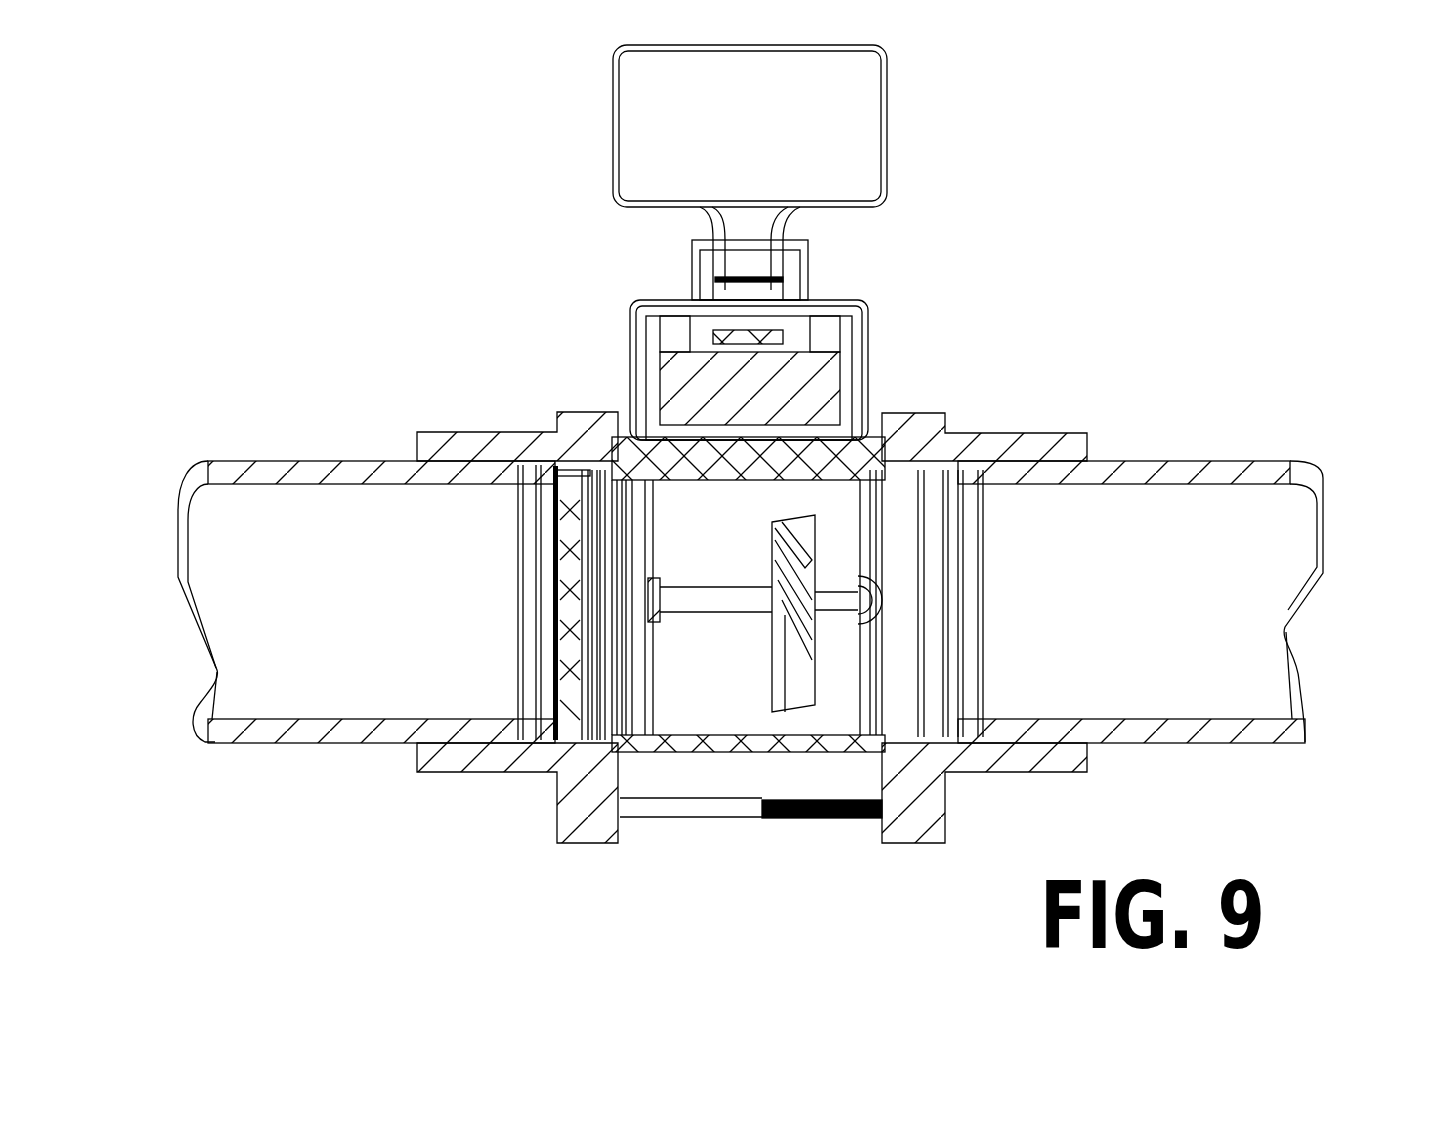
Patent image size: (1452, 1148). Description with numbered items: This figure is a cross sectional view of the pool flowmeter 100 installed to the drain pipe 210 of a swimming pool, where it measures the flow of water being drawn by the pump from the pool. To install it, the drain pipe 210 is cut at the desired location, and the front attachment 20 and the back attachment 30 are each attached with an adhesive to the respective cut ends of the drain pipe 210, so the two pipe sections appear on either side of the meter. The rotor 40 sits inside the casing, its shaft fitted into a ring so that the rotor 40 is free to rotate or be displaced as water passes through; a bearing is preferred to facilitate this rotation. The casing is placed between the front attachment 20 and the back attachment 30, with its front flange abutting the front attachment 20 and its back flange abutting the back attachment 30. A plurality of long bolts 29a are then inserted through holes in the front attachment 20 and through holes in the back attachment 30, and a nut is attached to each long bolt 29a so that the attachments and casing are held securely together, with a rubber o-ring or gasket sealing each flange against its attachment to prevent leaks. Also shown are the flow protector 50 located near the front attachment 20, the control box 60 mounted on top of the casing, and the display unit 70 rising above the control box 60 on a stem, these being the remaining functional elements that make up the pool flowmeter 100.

The pool flowmeter 100 is at (600, 283).
The drain pipe 210 is at (312, 540).
The front attachment 20 is at (505, 433).
The back attachment 30 is at (962, 432).
The rotor 40 is at (768, 682).
The flow protector 50 is at (575, 682).
The control box 60 is at (867, 350).
The display unit 70 is at (820, 130).
The long bolt 29a is at (745, 812).